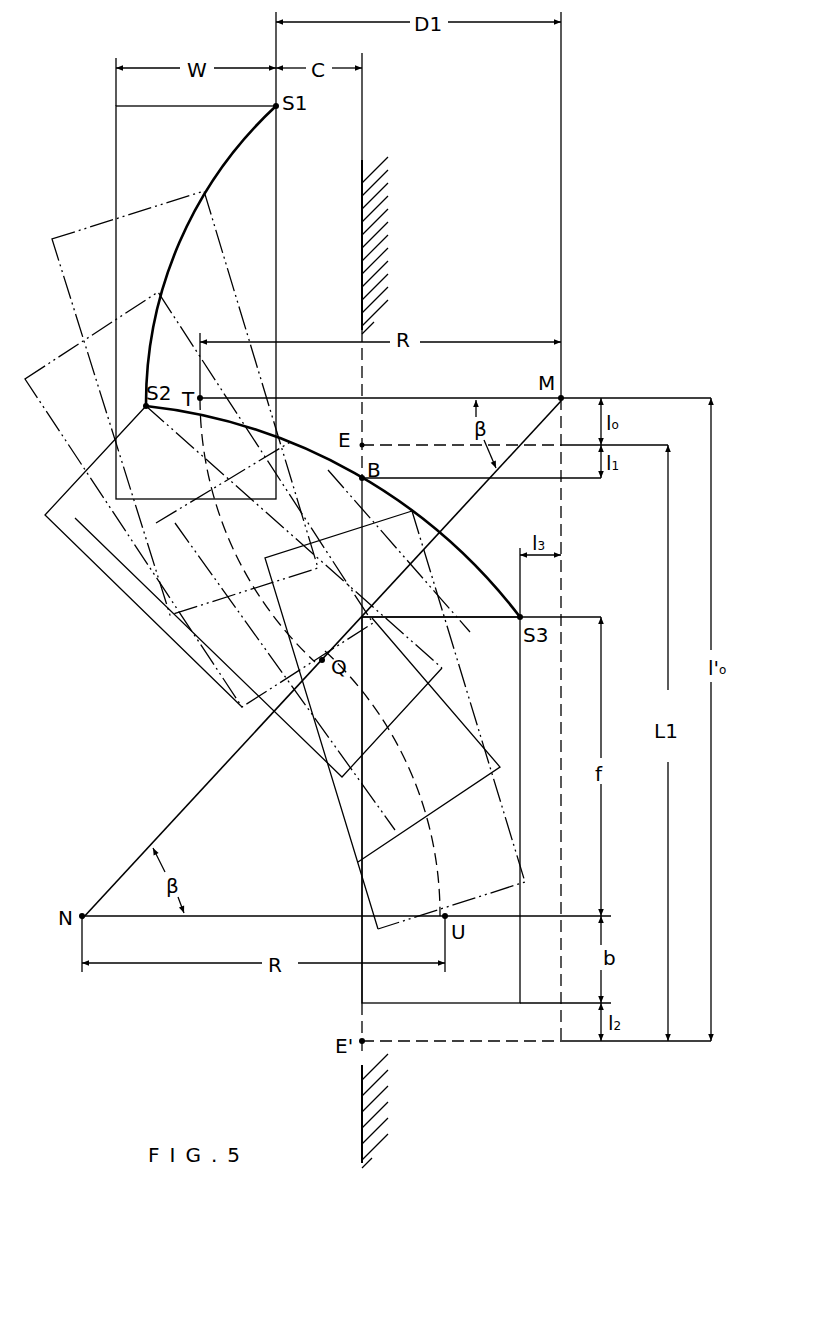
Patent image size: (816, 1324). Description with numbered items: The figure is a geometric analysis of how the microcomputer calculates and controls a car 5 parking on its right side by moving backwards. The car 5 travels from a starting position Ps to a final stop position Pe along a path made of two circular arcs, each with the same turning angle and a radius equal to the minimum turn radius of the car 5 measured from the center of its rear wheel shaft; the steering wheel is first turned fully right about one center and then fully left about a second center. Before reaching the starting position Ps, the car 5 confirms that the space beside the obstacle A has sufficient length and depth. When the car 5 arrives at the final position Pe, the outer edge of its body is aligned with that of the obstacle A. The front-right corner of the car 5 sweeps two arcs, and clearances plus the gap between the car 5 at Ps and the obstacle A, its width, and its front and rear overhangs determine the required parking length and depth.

The car 5 is at (162, 302).
The starting position Ps is at (116, 200).
The final stop position Pe is at (362, 991).
The obstacle A is at (423, 257).